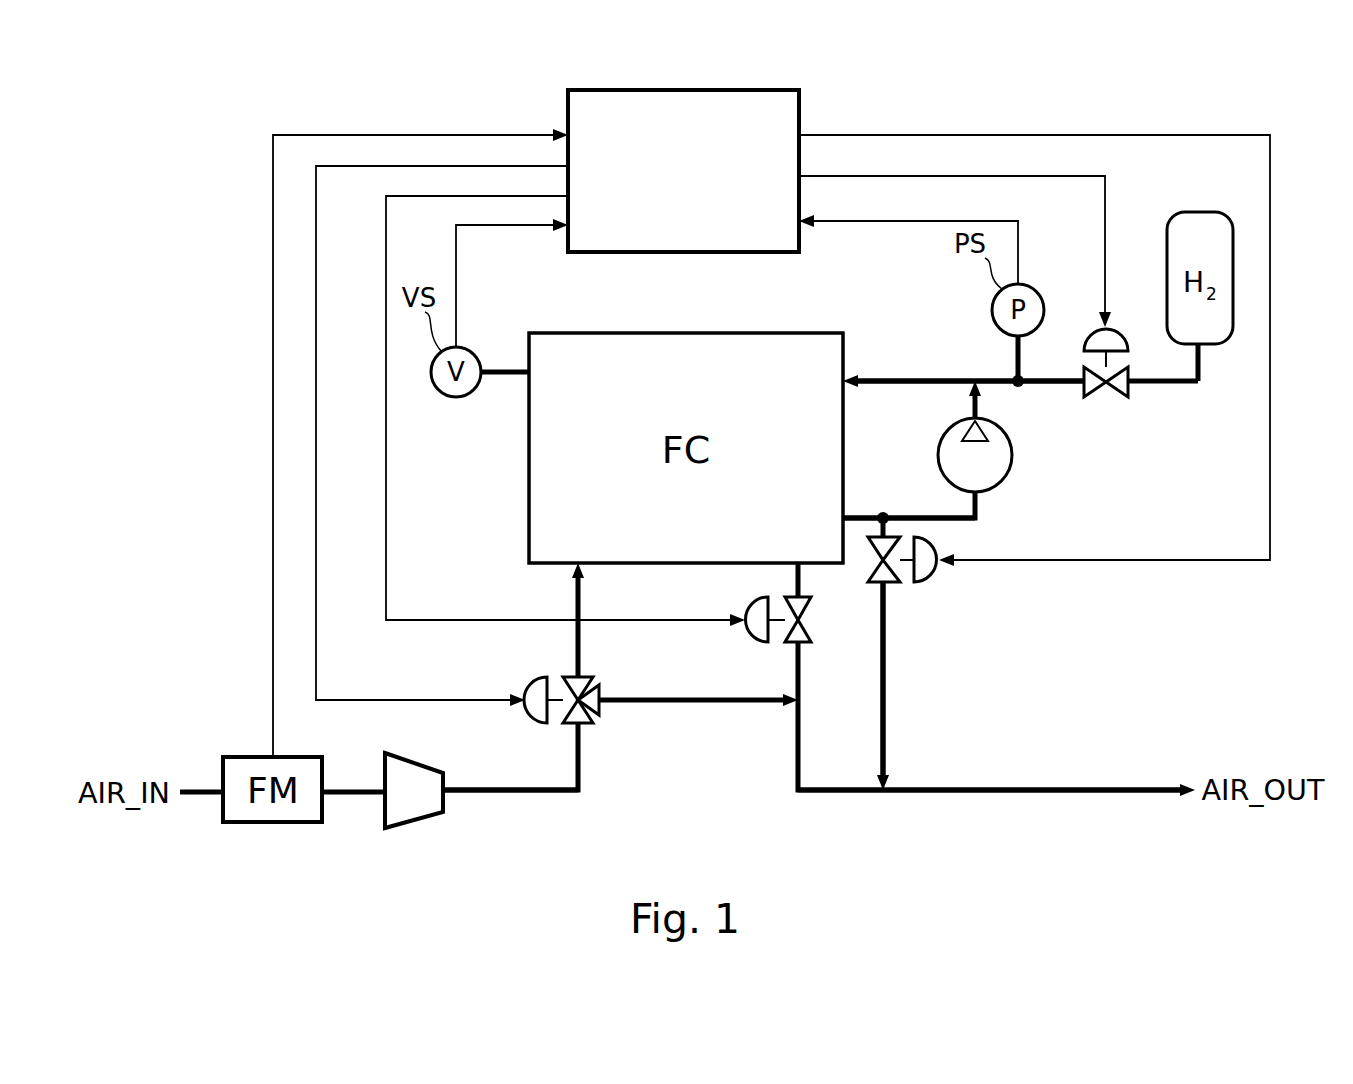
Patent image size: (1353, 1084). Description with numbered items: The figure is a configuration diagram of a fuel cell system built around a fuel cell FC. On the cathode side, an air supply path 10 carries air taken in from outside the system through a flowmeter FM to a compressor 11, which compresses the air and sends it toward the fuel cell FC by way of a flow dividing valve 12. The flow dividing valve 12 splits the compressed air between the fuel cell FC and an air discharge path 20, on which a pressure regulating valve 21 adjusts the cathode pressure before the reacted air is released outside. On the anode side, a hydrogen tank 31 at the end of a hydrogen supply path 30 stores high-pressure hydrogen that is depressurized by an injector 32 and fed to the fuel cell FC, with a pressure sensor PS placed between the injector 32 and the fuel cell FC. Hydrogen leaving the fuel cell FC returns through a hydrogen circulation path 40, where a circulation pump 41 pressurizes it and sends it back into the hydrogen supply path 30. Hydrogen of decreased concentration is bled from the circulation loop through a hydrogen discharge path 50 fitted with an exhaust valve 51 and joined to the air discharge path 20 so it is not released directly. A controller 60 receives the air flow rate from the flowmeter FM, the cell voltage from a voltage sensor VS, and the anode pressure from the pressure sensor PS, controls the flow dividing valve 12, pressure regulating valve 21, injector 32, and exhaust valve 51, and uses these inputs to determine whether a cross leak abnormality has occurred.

The air supply path 10 is at (493, 786).
The compressor 11 is at (422, 817).
The flow dividing valve 12 is at (524, 688).
The air discharge path 20 is at (1022, 788).
The pressure regulating valve 21 is at (745, 635).
The hydrogen supply path 30 is at (900, 378).
The hydrogen tank 31 is at (1187, 213).
The injector 32 is at (1118, 336).
The hydrogen circulation path 40 is at (912, 515).
The circulation pump 41 is at (1002, 477).
The hydrogen discharge path 50 is at (886, 630).
The exhaust valve 51 is at (937, 572).
The controller 60 is at (800, 103).